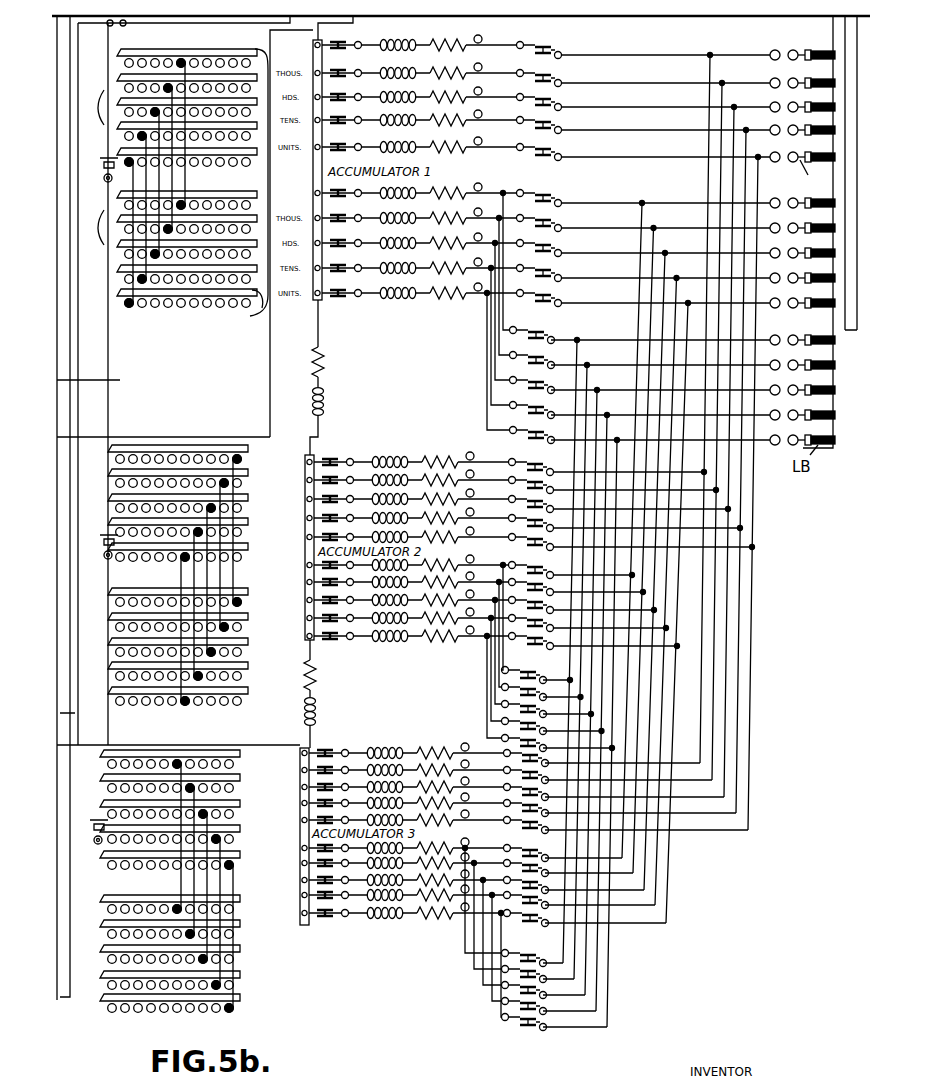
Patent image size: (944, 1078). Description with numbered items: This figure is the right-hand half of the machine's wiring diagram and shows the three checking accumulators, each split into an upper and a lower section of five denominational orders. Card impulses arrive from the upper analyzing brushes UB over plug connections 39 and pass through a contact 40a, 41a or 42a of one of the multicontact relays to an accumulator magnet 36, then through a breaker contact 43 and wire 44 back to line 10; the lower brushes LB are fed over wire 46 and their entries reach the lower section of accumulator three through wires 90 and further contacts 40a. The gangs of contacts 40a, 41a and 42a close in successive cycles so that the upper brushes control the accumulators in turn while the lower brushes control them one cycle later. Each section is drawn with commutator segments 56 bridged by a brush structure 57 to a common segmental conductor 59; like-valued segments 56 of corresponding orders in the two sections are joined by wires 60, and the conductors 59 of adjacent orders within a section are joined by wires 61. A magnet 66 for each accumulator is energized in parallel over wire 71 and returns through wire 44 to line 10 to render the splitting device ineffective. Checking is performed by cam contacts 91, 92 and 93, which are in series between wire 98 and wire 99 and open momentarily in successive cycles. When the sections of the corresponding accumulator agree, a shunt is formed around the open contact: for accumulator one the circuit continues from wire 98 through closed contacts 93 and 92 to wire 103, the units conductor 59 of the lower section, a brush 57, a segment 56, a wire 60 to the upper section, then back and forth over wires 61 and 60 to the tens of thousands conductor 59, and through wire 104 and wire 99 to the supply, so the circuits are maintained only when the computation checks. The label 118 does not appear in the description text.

The line 10 is at (100, 549).
The accumulator magnet 36 is at (380, 905).
The plug connections 39 is at (790, 50).
The contacts of multicontact relay 40 40a is at (520, 1010).
The contacts of multicontact relay 41 41a is at (528, 590).
The contacts of multicontact relay 42 42a is at (520, 880).
The breaker contact 43 is at (318, 913).
The wire 44 is at (210, 748).
The wire 46 is at (850, 325).
The segments 56 is at (222, 230).
The brush structure 57 is at (126, 262).
The common segmental conductor 59 is at (253, 182).
The wires 60 is at (180, 188).
The wires 61 is at (97, 167).
The magnet 66 is at (335, 712).
The wire 71 is at (270, 405).
The wires 90 is at (580, 975).
The cam contact 91 is at (103, 160).
The cam contact 92 is at (102, 535).
The cam contact 93 is at (93, 820).
The wire 98 is at (62, 1022).
The wire 99 is at (99, 33).
The wire 103 is at (108, 403).
The wire 104 is at (130, 33).
The relay 118 is at (792, 176).